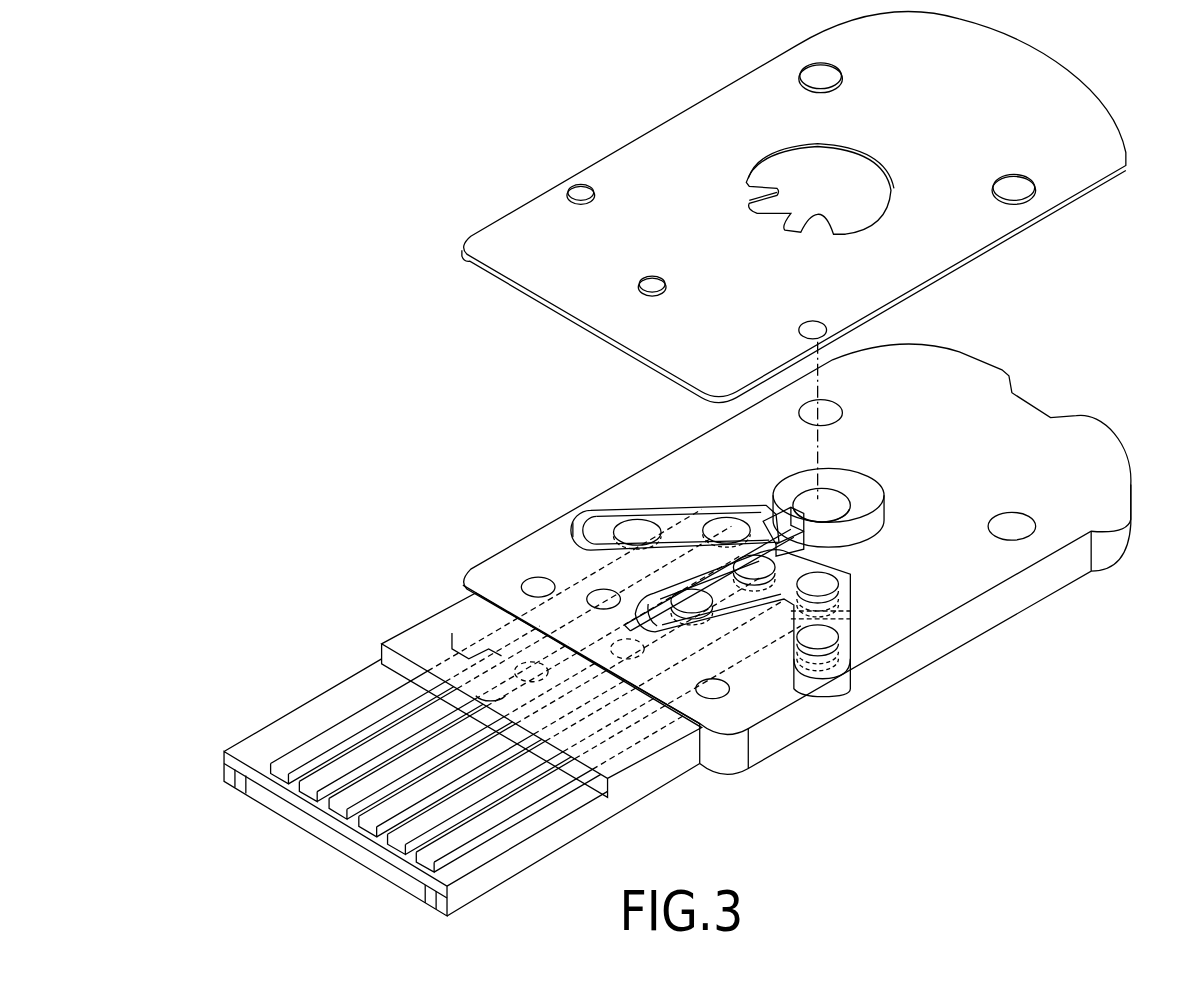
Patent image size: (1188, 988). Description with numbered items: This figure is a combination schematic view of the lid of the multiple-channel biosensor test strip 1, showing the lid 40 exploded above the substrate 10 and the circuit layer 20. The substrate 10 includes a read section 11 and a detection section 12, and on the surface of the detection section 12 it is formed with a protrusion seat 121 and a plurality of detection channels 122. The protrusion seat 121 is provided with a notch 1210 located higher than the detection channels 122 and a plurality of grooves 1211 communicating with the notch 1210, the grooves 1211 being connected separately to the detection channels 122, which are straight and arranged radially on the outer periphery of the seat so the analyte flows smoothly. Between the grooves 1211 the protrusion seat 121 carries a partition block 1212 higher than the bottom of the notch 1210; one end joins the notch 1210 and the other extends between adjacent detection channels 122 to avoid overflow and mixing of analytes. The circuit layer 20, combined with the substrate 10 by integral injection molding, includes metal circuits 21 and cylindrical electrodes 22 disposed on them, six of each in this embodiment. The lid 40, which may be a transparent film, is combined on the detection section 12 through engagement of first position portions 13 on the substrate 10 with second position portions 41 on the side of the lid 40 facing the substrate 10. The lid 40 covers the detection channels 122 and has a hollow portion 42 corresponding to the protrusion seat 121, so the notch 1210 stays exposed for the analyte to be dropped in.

The multiple-channel biosensor test strip 1 is at (687, 35).
The substrate 10 is at (817, 609).
The read section 11 is at (627, 795).
The detection section 12 is at (928, 643).
The first position portions 13 is at (1020, 527).
The protrusion seat 121 is at (785, 513).
The notch 1210 is at (822, 510).
The grooves 1211 is at (758, 526).
The partition block 1212 is at (788, 515).
The detection channels 122 is at (626, 485).
The circuit layer 20 is at (501, 712).
The metal circuits 21 is at (373, 712).
The electrodes 22 is at (822, 583).
The lid 40 is at (637, 160).
The second position portions 41 is at (1023, 193).
The hollow portion 42 is at (790, 167).